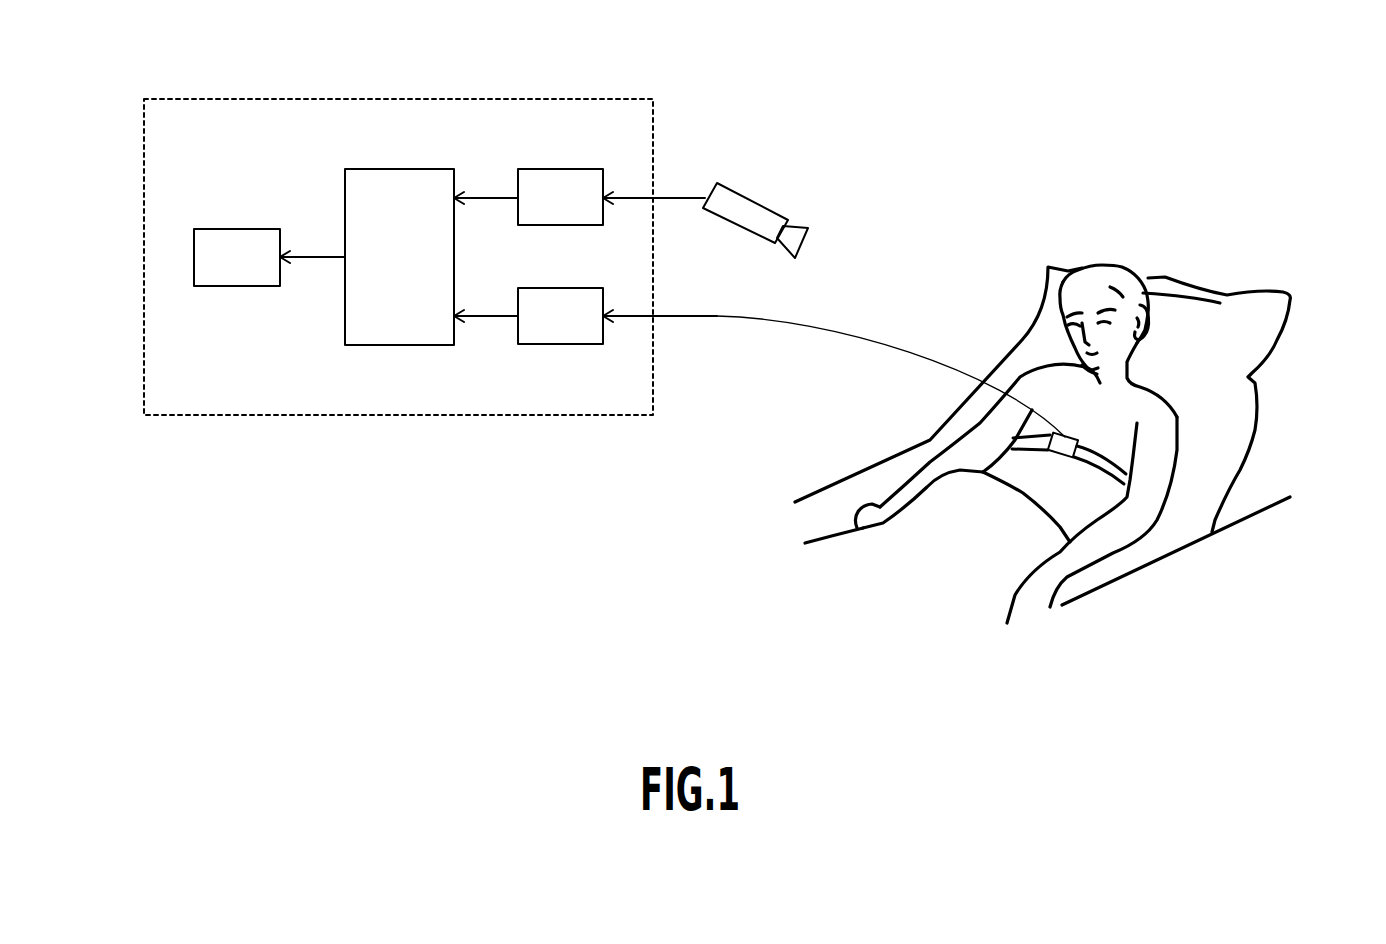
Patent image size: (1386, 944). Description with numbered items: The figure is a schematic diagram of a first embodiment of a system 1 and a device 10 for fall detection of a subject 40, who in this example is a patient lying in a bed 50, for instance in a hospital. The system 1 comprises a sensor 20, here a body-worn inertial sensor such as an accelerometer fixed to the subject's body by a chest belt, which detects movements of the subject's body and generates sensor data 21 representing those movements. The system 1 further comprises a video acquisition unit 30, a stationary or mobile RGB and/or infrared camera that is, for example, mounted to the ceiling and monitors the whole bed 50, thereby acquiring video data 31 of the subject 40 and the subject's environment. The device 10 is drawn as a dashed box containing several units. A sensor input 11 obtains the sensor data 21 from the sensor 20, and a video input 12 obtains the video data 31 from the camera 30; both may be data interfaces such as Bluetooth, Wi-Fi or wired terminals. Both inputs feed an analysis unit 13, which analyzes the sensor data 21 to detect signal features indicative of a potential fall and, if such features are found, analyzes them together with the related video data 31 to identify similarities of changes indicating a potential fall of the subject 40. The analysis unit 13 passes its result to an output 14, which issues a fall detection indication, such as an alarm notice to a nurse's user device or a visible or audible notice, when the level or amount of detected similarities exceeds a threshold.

The system 1 is at (1238, 52).
The device 10 is at (289, 416).
The sensor input 11 is at (560, 345).
The video input 12 is at (558, 168).
The analysis unit 13 is at (397, 345).
The output 14 is at (237, 288).
The sensor 20 is at (1078, 438).
The sensor data 21 is at (720, 316).
The video acquisition unit 30 is at (755, 198).
The video data 31 is at (673, 197).
The subject 40 is at (1143, 400).
The bed 50 is at (1240, 405).